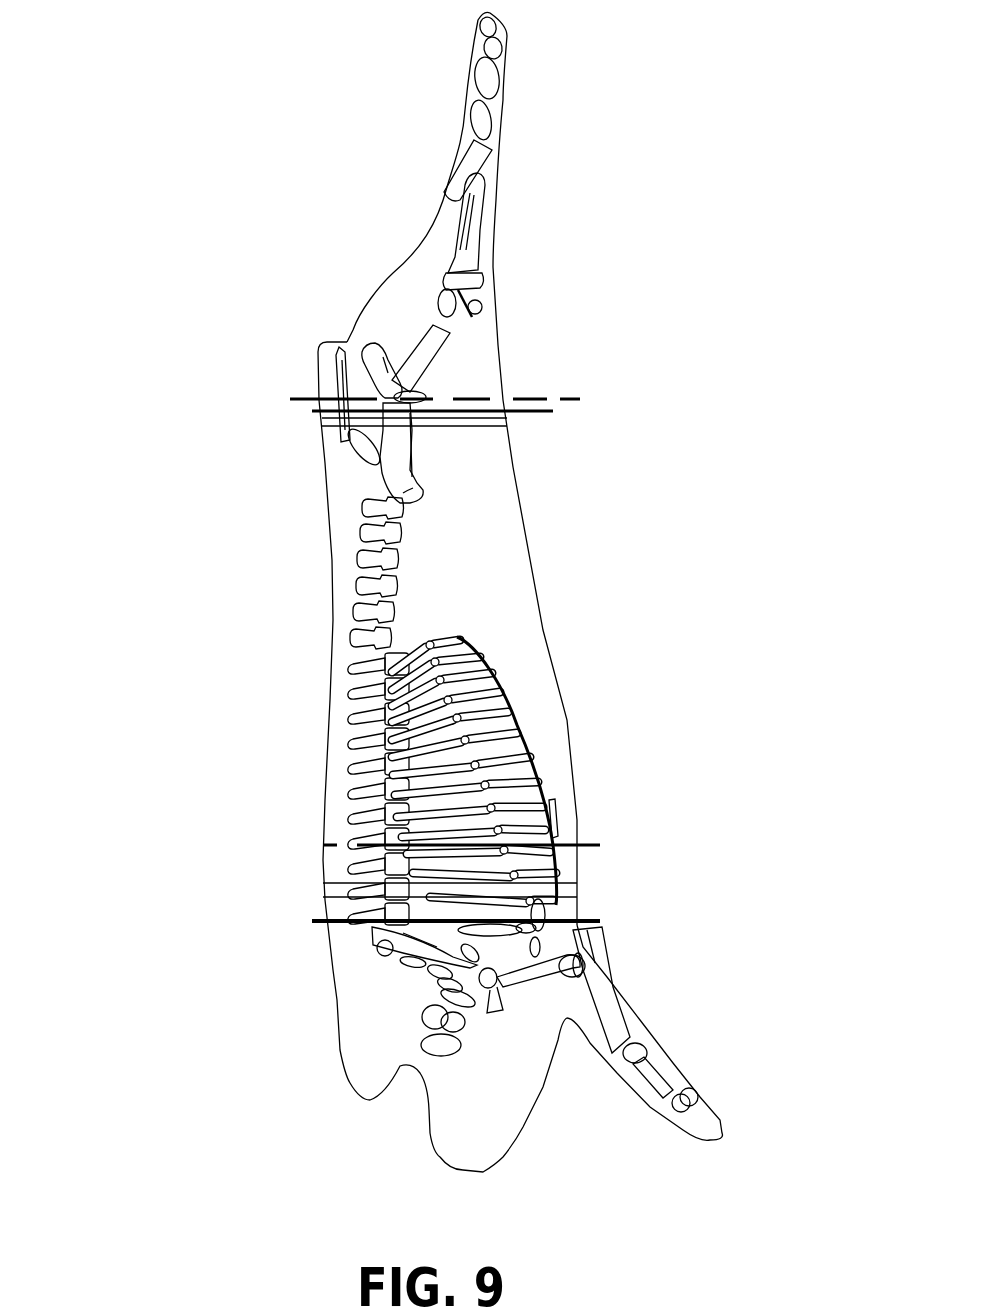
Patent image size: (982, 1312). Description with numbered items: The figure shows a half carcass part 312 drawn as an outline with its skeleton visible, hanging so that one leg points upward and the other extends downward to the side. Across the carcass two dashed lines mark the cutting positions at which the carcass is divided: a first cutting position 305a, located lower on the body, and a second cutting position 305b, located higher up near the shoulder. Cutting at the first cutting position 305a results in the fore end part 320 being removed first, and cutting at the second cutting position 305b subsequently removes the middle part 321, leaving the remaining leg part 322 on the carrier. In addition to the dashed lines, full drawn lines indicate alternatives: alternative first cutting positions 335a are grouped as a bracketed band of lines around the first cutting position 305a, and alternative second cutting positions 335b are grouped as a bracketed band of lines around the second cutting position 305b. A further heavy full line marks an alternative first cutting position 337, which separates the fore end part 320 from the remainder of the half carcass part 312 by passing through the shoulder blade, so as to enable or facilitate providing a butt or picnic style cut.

The half carcass part 312 is at (163, 1028).
The fore end part 320 is at (325, 943).
The middle part 321 is at (335, 662).
The leg part 322 is at (383, 295).
The first cutting position 305a is at (600, 845).
The second cutting position 305b is at (580, 397).
The alternative first cutting positions 335a is at (610, 873).
The alternative second cutting positions 335b is at (560, 400).
The alternative first cutting position 337 is at (307, 921).